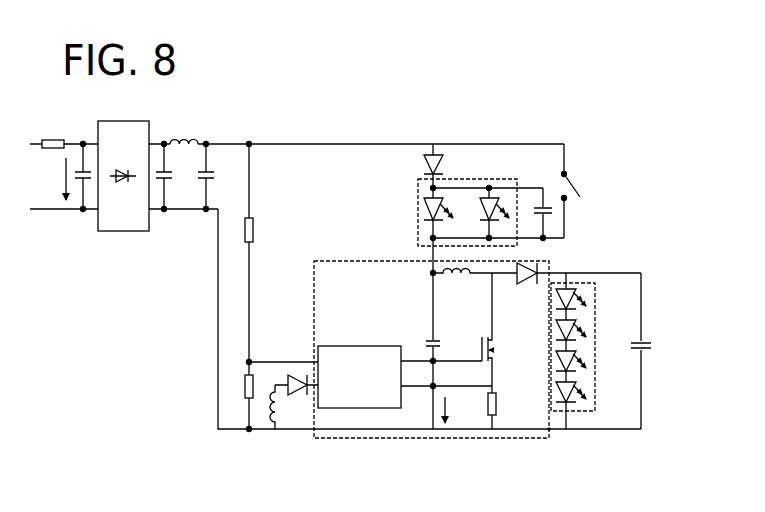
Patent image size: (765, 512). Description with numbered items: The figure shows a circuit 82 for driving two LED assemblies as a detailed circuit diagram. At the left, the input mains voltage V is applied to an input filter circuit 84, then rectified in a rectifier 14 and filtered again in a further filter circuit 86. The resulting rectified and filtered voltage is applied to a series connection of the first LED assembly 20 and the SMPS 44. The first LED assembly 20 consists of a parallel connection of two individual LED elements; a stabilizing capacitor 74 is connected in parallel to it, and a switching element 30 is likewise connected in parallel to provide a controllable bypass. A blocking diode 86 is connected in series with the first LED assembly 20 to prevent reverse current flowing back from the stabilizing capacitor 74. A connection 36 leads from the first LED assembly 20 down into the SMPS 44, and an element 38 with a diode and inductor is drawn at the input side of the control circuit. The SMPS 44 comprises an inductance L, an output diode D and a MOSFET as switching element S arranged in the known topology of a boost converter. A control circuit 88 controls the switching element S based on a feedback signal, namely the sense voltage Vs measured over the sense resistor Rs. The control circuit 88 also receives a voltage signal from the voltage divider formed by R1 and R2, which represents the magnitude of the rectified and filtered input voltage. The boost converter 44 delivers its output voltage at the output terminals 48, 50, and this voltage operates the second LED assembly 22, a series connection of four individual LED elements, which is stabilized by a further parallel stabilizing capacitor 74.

The circuit 82 is at (323, 113).
The input filter circuit 84 is at (64, 215).
The rectifier 14 is at (117, 231).
The further filter circuit / blocking diode 86 is at (198, 135).
The first LED assembly 20 is at (458, 179).
The stabilizing capacitor 74 is at (645, 342).
The switching element 30 is at (582, 182).
The connection to LED module 36 is at (430, 258).
The diode with inductor 38 is at (284, 430).
The control circuit 88 is at (348, 390).
The SMPS 44 is at (455, 438).
The output terminal 48 is at (568, 282).
The second LED assembly 22 is at (585, 283).
The output terminal 50 is at (550, 433).
The voltage divider resistor R1 is at (254, 225).
The voltage divider resistor R2 is at (245, 389).
The sense resistor Rs is at (497, 406).
The inductance L is at (455, 283).
The output diode D is at (530, 285).
The switching element S is at (493, 352).
The input mains voltage V is at (53, 179).
The sense voltage Vs is at (457, 412).